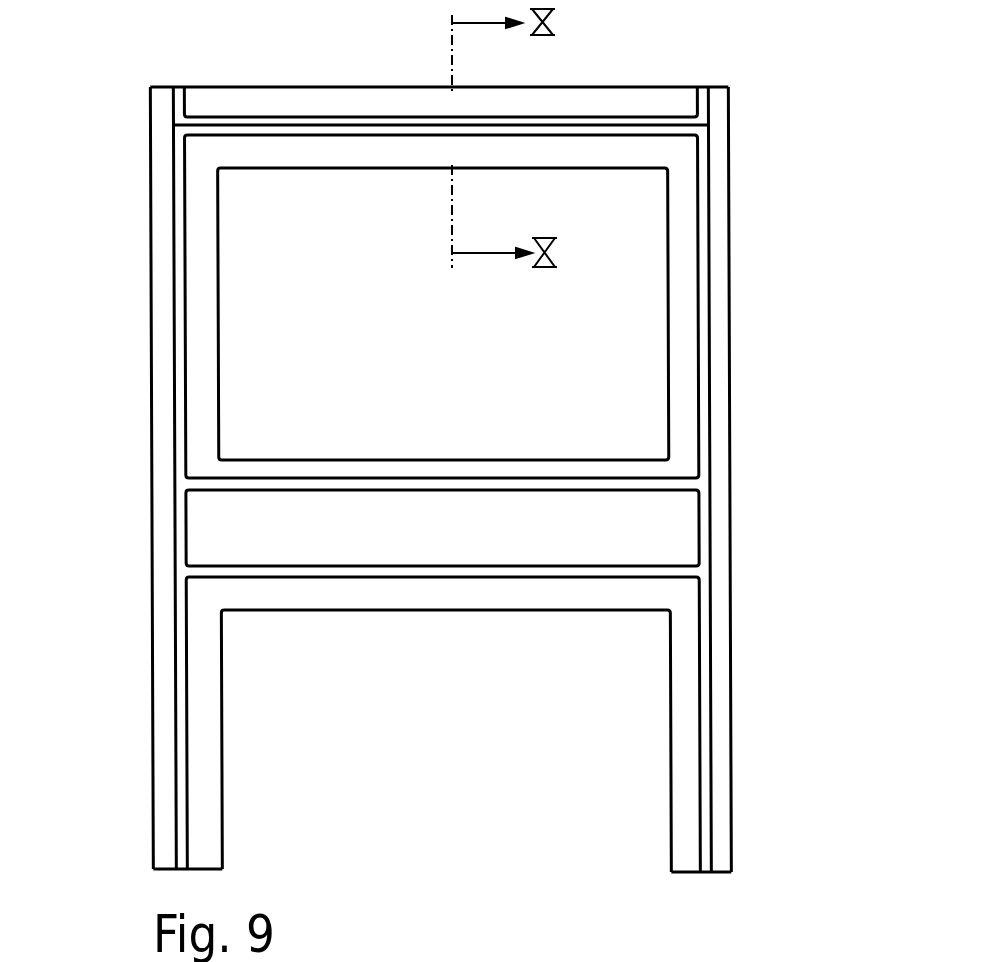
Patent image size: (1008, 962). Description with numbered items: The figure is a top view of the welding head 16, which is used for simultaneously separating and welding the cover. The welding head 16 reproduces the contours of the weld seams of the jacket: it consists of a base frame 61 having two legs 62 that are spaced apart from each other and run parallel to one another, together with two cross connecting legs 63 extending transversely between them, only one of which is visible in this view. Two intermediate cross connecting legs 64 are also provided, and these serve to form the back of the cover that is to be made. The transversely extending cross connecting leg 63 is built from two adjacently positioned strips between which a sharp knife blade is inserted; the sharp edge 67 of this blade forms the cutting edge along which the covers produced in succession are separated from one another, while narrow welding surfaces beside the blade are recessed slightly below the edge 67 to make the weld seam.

The welding head 16 is at (772, 352).
The base frame 61 is at (723, 668).
The leg 62 is at (731, 468).
The cross connecting leg 63 is at (383, 170).
The intermediate cross connecting leg 64 is at (398, 611).
The sharp edge 67 is at (710, 210).